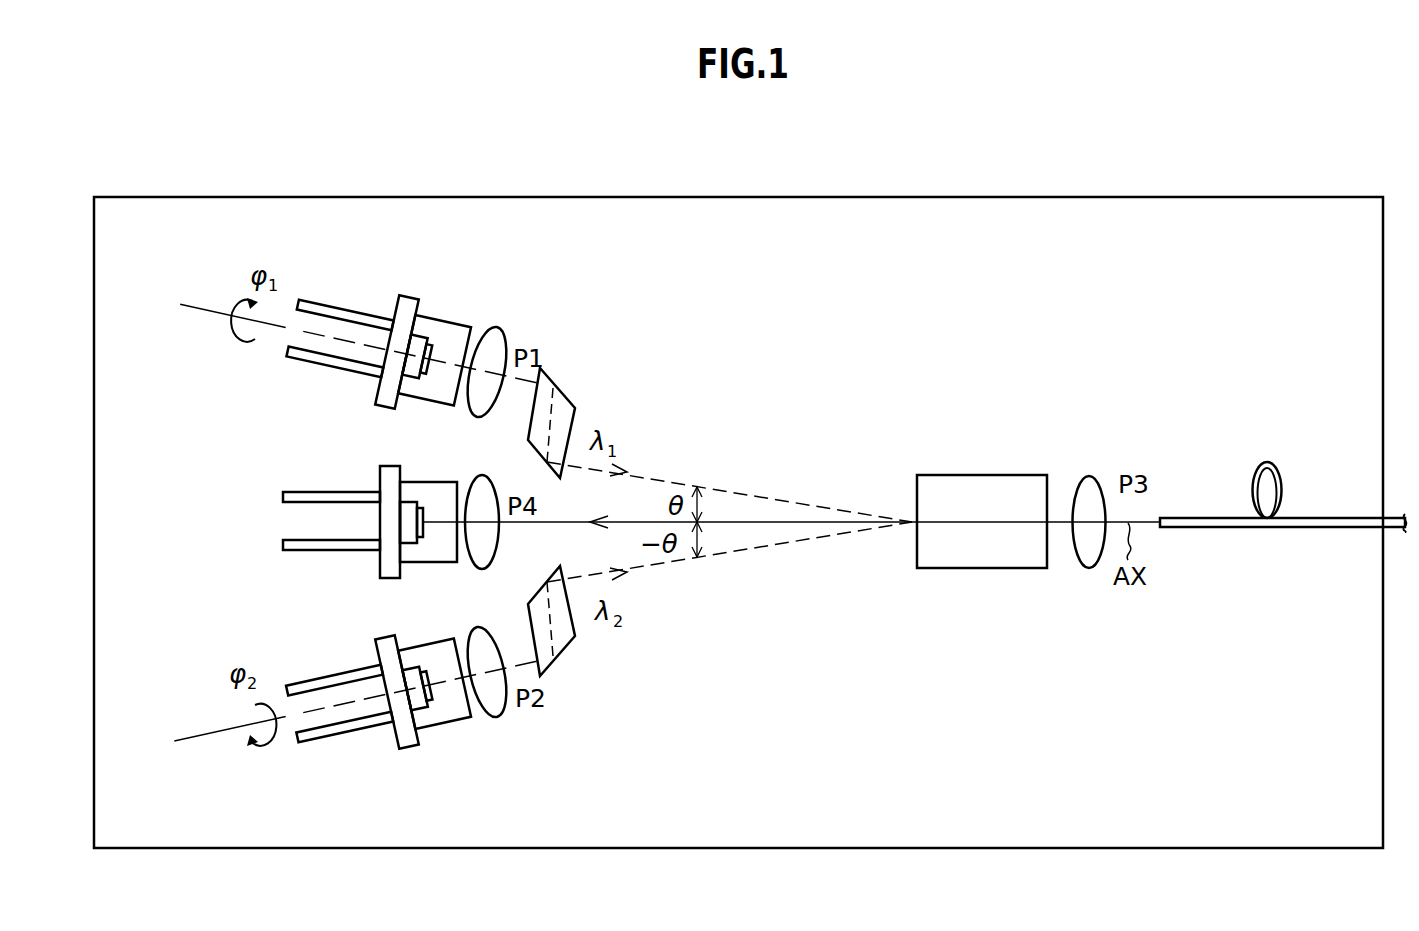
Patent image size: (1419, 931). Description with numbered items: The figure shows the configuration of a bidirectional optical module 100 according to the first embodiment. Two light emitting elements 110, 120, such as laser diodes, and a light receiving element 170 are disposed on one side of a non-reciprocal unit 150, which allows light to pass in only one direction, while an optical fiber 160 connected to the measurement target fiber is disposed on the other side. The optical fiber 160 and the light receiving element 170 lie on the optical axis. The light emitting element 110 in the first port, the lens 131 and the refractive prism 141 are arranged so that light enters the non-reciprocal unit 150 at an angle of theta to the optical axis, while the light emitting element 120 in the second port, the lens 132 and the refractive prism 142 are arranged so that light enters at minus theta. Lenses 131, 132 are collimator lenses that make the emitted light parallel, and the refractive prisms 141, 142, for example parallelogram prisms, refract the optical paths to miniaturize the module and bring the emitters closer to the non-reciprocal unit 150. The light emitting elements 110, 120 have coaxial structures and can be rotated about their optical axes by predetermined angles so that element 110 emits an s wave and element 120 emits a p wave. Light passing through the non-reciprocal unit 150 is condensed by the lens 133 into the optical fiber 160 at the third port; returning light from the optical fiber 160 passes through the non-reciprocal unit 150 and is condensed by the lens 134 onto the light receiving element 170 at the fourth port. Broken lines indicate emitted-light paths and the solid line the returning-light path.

The bidirectional optical module 100 is at (1217, 197).
The light emitting element 110 is at (430, 318).
The light emitting element 120 is at (433, 727).
The lens 131 is at (498, 328).
The lens 132 is at (493, 716).
The lens 133 is at (1087, 476).
The lens 134 is at (482, 569).
The refractive prism 141 is at (543, 370).
The refractive prism 142 is at (565, 645).
The non-reciprocal unit 150 is at (980, 475).
The optical fiber 160 is at (1190, 517).
The light receiving element 170 is at (413, 565).